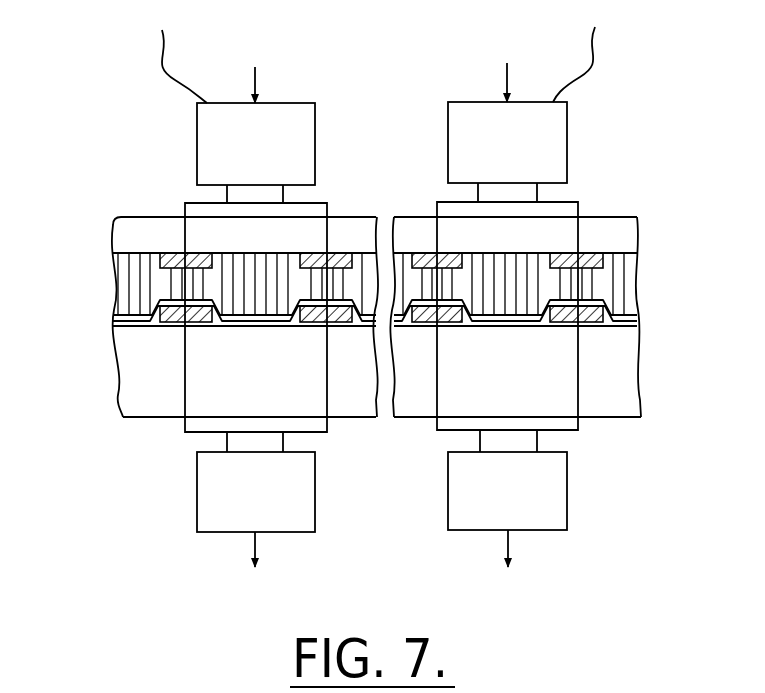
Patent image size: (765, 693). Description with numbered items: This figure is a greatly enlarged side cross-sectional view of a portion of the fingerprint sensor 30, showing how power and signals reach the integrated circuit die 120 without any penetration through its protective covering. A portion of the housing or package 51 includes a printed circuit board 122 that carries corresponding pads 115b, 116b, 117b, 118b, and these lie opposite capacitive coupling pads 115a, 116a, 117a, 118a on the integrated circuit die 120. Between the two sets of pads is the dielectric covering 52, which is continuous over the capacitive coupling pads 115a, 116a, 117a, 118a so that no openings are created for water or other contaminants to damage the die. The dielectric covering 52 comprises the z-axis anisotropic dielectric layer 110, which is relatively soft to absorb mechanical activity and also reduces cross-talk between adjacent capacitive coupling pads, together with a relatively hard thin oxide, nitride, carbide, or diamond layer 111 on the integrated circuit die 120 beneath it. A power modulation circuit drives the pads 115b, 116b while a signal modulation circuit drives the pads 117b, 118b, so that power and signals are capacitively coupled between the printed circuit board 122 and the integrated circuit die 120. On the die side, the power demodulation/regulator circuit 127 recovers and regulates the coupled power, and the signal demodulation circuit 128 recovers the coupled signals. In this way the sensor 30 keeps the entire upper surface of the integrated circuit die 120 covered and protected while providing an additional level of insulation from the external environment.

The fingerprint sensor 30 is at (647, 163).
The housing or package 51 is at (642, 222).
The dielectric layer 52 is at (115, 267).
The z-axis anisotropic dielectric layer 110 is at (128, 298).
The thin oxide, nitride, carbide, or diamond layer 111 is at (117, 323).
The capacitive coupling pad 115a is at (167, 313).
The corresponding pad 115b is at (153, 252).
The capacitive coupling pad 116a is at (313, 327).
The corresponding pad 116b is at (343, 252).
The capacitive coupling pad 117a is at (440, 322).
The corresponding pad 117b is at (437, 253).
The capacitive coupling pad 118a is at (593, 312).
The corresponding pad 118b is at (597, 258).
The integrated circuit die 120 is at (643, 385).
The printed circuit board 122 is at (157, 231).
The power demodulation/regulator circuit 127 is at (197, 483).
The signal demodulation circuit 128 is at (568, 483).